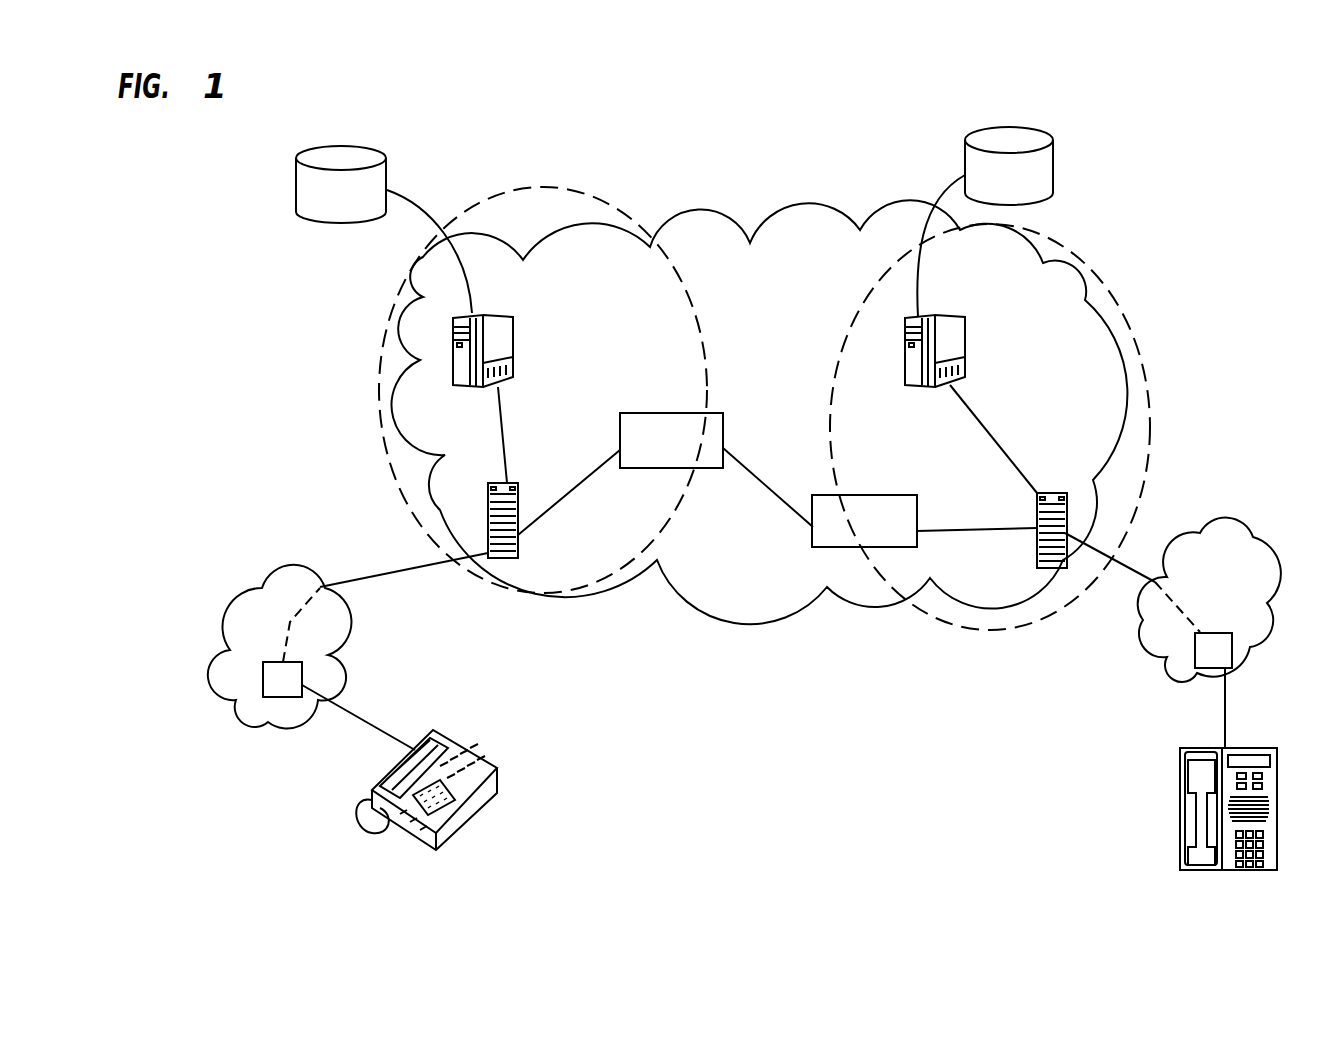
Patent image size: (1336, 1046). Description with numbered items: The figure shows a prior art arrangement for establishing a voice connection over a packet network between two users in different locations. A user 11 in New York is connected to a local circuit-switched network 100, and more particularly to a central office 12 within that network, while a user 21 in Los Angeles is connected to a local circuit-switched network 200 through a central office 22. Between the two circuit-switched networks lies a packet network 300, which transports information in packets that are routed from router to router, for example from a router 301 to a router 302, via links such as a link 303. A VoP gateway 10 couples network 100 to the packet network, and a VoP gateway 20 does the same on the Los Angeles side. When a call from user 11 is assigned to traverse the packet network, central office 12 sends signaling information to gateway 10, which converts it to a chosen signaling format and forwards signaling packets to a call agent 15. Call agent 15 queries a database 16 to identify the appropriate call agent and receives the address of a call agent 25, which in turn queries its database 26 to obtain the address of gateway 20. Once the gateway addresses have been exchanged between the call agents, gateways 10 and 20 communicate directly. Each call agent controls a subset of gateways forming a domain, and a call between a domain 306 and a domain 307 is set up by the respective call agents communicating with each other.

The VoP gateway 10 is at (519, 486).
The user 11 is at (475, 740).
The central office 12 is at (295, 662).
The call agent 15 is at (512, 352).
The database 16 is at (368, 150).
The VoP gateway 20 is at (1058, 496).
The user 21 is at (1250, 748).
The central office 22 is at (1215, 632).
The call agent 25 is at (965, 353).
The database 26 is at (1040, 130).
The local circuit-switched network 100 is at (232, 722).
The local circuit-switched network 200 is at (1158, 667).
The packet network 300 is at (707, 613).
The router 301 is at (717, 414).
The router 302 is at (895, 495).
The link 303 is at (771, 488).
The domain 306 is at (528, 188).
The domain 307 is at (1087, 263).